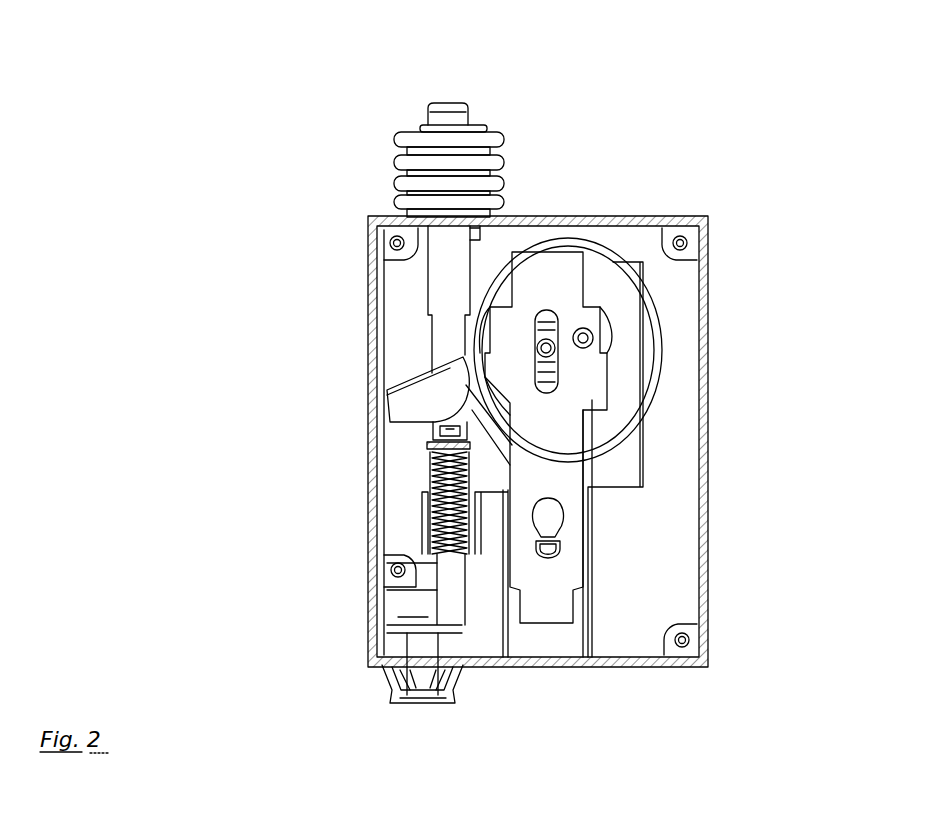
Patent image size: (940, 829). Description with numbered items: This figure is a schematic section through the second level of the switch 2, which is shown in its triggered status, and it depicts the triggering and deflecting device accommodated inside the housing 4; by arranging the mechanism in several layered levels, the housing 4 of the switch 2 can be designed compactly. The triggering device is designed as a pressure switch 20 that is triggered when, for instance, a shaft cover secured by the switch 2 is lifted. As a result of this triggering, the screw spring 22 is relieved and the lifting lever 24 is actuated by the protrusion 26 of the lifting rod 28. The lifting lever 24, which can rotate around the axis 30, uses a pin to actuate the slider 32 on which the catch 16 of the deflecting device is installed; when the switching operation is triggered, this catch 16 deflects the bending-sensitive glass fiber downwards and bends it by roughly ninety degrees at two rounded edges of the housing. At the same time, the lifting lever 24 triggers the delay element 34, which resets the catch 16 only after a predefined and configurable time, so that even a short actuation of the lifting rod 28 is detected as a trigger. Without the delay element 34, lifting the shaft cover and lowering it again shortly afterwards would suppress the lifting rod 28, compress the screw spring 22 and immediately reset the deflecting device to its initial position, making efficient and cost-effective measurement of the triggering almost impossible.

The switch 2 is at (843, 429).
The housing 4 is at (708, 563).
The catch 16 is at (562, 515).
The pressure switch 20 is at (457, 100).
The screw spring 22 is at (430, 462).
The lifting lever 24 is at (387, 390).
The protrusion 26 is at (433, 436).
The lifting rod 28 is at (442, 592).
The axis 30 is at (552, 310).
The slider 32 is at (590, 370).
The delay element 34 is at (598, 330).